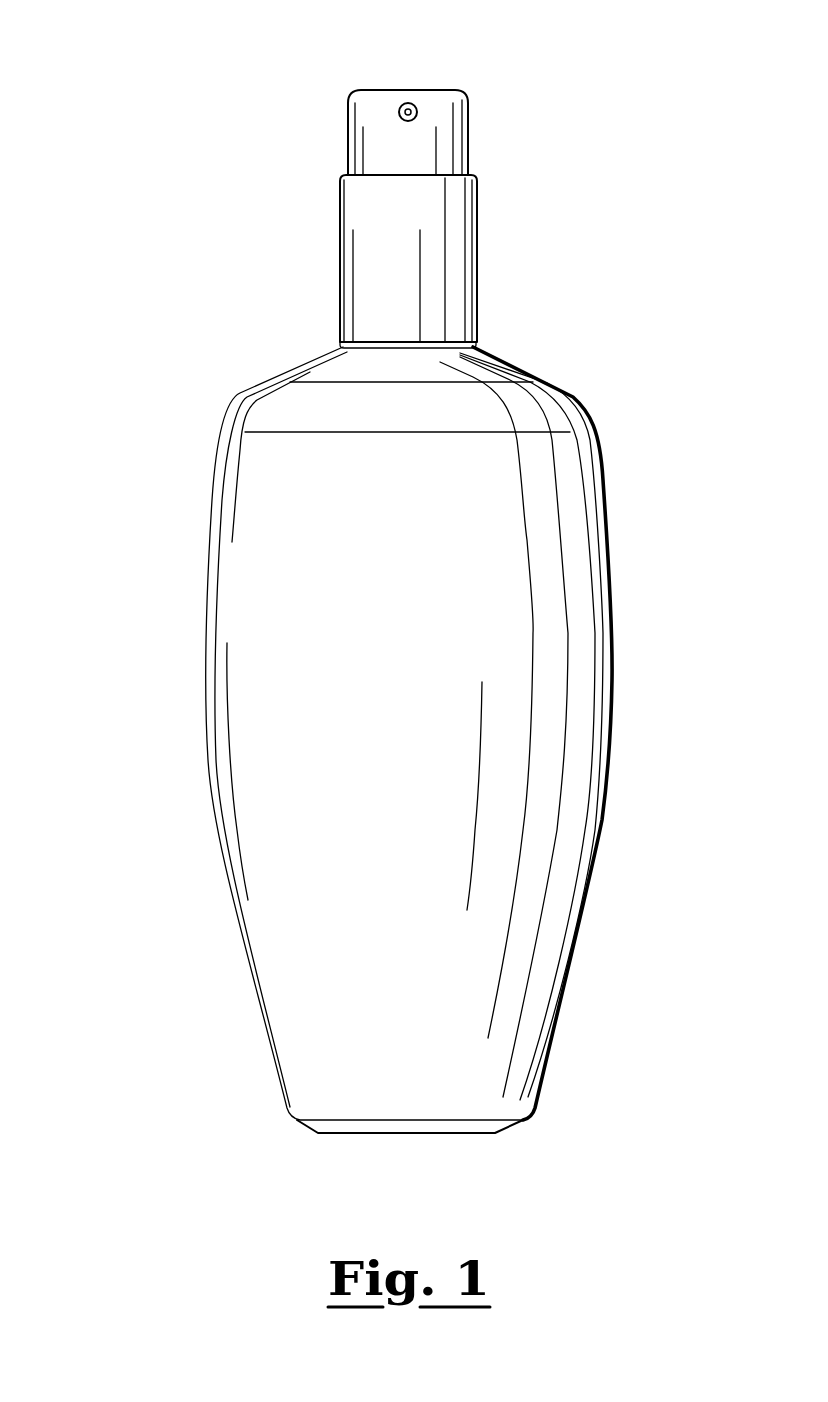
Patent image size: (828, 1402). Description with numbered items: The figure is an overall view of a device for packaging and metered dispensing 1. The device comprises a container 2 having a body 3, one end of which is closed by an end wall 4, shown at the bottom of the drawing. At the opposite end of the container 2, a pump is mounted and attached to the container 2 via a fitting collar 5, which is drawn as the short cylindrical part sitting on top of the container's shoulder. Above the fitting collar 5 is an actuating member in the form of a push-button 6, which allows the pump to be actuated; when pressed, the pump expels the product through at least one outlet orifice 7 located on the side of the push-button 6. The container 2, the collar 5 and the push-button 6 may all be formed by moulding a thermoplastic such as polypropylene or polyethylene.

The device for packaging and metered dispensing 1 is at (212, 308).
The container 2 is at (193, 711).
The body 3 is at (606, 808).
The end wall 4 is at (367, 1134).
The fitting collar 5 is at (477, 258).
The push-button 6 is at (482, 143).
The outlet orifice 7 is at (417, 113).